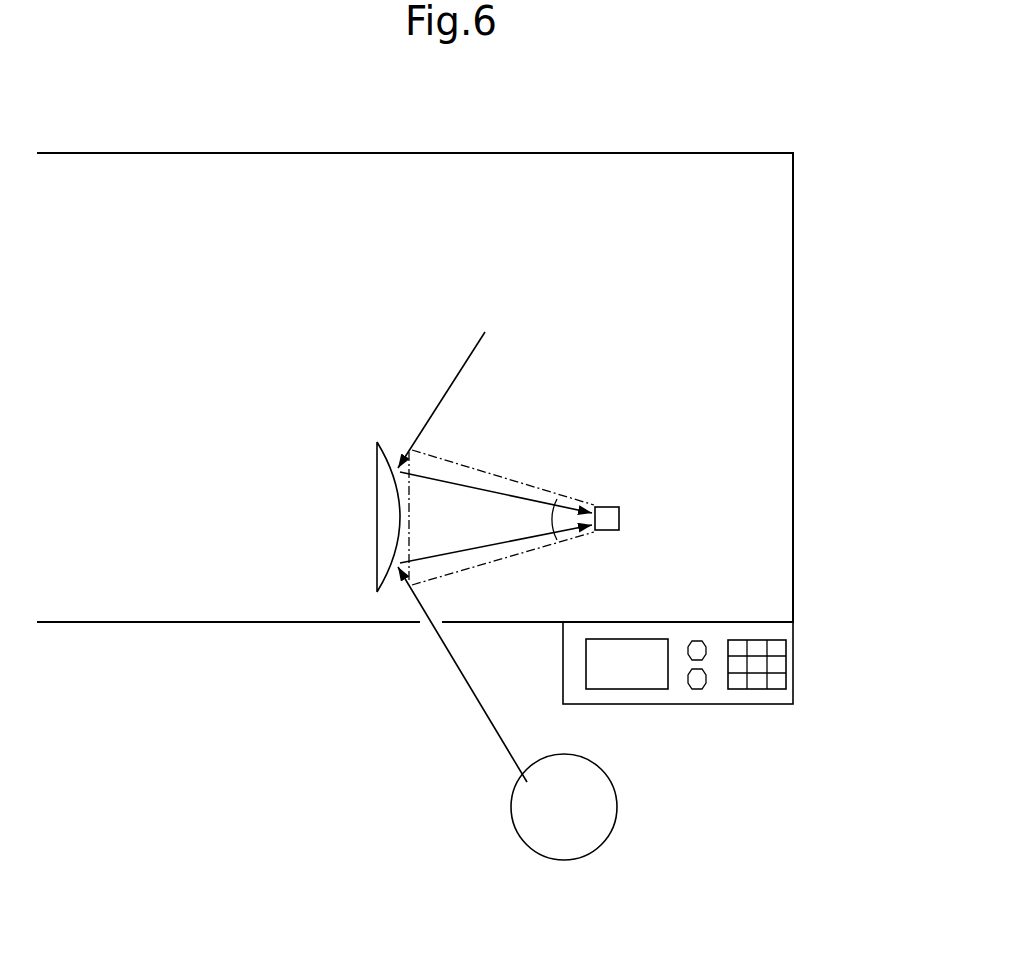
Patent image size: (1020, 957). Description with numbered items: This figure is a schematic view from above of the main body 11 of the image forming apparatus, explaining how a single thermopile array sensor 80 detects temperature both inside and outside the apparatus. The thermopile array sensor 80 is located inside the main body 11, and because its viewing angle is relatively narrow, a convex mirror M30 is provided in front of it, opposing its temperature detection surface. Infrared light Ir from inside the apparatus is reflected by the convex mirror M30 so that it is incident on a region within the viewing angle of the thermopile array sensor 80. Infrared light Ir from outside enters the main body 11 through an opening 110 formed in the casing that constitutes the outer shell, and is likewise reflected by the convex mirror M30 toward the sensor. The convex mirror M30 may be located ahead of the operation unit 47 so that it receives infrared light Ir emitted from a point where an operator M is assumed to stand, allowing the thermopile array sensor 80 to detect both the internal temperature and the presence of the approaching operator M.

The main body 11 is at (793, 381).
The convex mirror M30 is at (377, 520).
The thermopile array sensor 80 is at (619, 518).
The operation unit 47 is at (793, 663).
The opening 110 is at (416, 636).
The operator M is at (617, 802).
The infrared light Ir is at (457, 372).